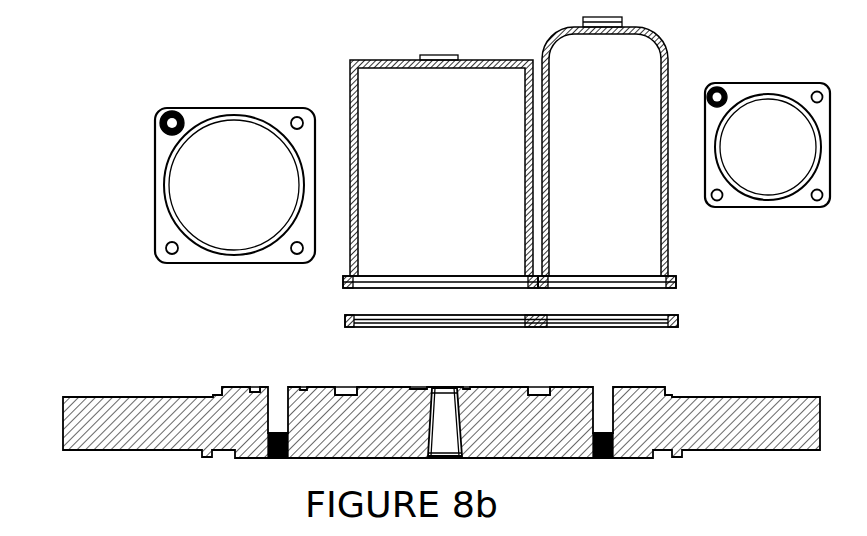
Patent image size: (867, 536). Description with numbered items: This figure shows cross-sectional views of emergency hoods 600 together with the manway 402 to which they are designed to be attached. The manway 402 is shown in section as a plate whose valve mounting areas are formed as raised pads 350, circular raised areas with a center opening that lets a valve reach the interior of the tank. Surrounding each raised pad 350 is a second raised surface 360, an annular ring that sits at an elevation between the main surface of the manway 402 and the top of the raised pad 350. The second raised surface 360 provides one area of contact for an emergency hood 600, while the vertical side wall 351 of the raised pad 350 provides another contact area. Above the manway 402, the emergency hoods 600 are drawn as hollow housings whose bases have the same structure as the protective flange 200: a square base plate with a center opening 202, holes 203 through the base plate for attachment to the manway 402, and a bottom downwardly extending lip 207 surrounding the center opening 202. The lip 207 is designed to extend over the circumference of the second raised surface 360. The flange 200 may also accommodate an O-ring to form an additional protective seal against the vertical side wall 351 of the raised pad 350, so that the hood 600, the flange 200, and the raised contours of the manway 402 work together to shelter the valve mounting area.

The protective flange 200 is at (267, 108).
The emergency hood 600 is at (474, 62).
The center opening 202 is at (753, 157).
The holes 203 is at (818, 202).
The downwardly extending lip 207 is at (583, 330).
The raised pad 350 is at (240, 388).
The vertical side wall 351 is at (218, 396).
The second raised surface 360 is at (215, 395).
The manway 402 is at (63, 420).